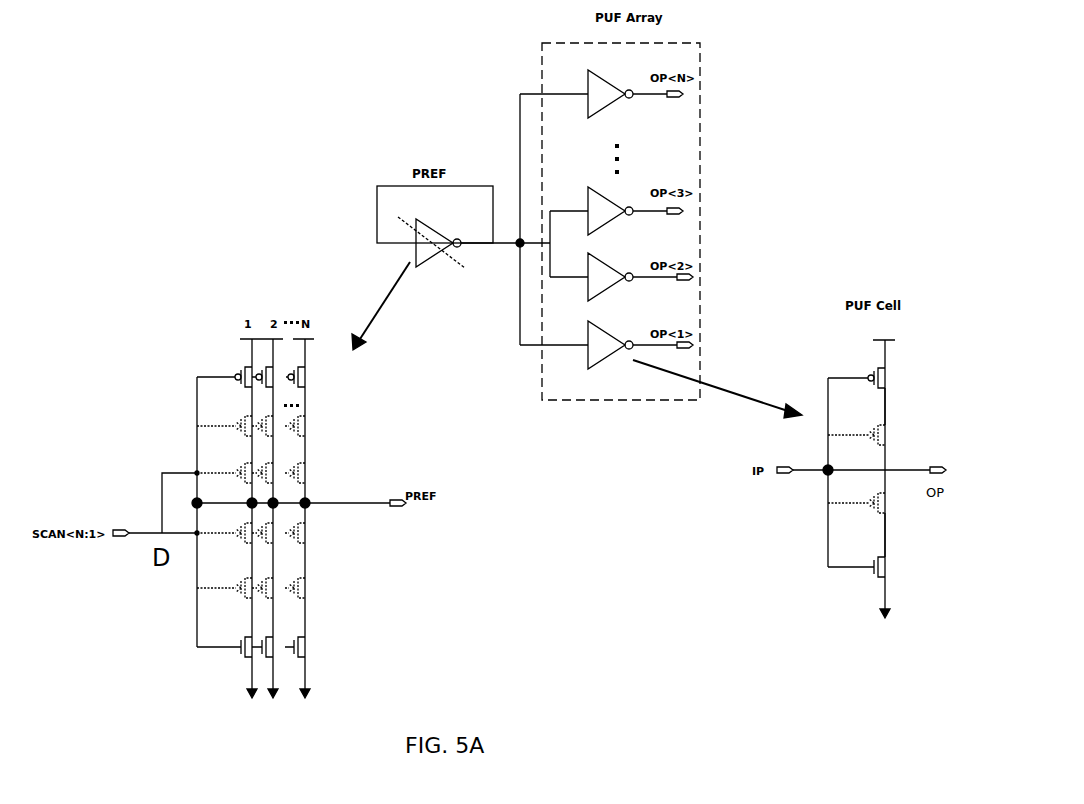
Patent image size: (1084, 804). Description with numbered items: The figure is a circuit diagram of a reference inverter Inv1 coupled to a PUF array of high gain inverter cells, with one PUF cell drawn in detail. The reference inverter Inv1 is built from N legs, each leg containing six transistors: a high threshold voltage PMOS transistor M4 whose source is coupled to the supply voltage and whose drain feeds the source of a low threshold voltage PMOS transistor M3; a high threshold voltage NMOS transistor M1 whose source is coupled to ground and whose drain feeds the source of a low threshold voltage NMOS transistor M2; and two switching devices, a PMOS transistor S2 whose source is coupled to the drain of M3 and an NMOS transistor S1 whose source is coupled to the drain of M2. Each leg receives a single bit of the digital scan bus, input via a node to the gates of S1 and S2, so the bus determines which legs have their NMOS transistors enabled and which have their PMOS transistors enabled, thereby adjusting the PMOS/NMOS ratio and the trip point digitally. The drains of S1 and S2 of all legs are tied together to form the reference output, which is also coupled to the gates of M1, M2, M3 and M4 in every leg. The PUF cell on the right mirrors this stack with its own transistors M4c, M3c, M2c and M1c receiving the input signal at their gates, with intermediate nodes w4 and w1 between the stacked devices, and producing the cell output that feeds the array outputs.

The reference inverter Inv1 is at (431, 256).
The PMOS transistor M4 is at (314, 377).
The PMOS transistor M3 is at (309, 426).
The PMOS transistor switch S2 is at (308, 472).
The NMOS transistor switch S1 is at (310, 535).
The NMOS transistor M2 is at (307, 590).
The NMOS transistor M1 is at (314, 648).
The PUF cell PMOS node w4 is at (872, 406).
The PUF cell NMOS node w1 is at (874, 535).
The PUF cell transistor M4 M4c is at (873, 378).
The PUF cell transistor M3 M3c is at (873, 435).
The PUF cell transistor M2 M2c is at (872, 503).
The PUF cell transistor M1 M1c is at (873, 567).